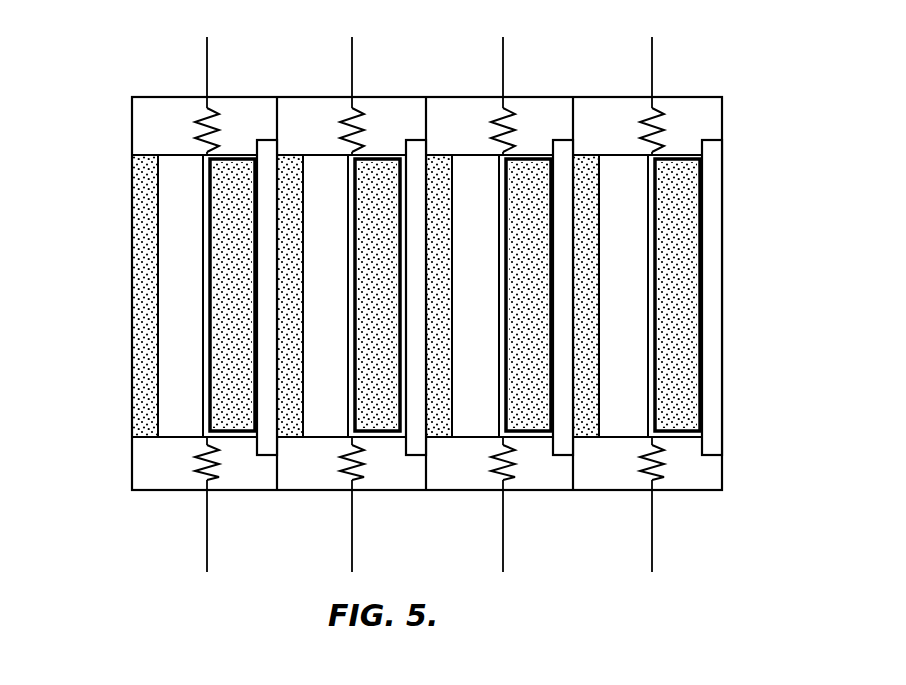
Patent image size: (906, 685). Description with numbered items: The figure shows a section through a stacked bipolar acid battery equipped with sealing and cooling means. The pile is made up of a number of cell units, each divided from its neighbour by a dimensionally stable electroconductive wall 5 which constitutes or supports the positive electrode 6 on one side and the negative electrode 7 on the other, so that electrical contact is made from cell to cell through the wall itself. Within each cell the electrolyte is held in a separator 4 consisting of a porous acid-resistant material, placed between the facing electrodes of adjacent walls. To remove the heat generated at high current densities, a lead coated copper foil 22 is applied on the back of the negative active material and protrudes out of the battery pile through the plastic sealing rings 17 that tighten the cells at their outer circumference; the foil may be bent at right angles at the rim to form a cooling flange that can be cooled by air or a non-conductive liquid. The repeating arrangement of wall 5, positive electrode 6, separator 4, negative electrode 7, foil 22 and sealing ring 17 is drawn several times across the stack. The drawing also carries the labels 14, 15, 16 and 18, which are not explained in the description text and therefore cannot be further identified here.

The separator 4 is at (267, 352).
The electroconductive wall 5 is at (177, 290).
The positive electrode 6 is at (140, 200).
The negative electrode 7 is at (240, 373).
The chamber 14 is at (622, 415).
The electrode material 15 is at (682, 403).
The current collector 16 is at (690, 150).
The sealing ring 17 is at (155, 128).
The resistor 18 is at (345, 113).
The copper foil 22 is at (206, 65).